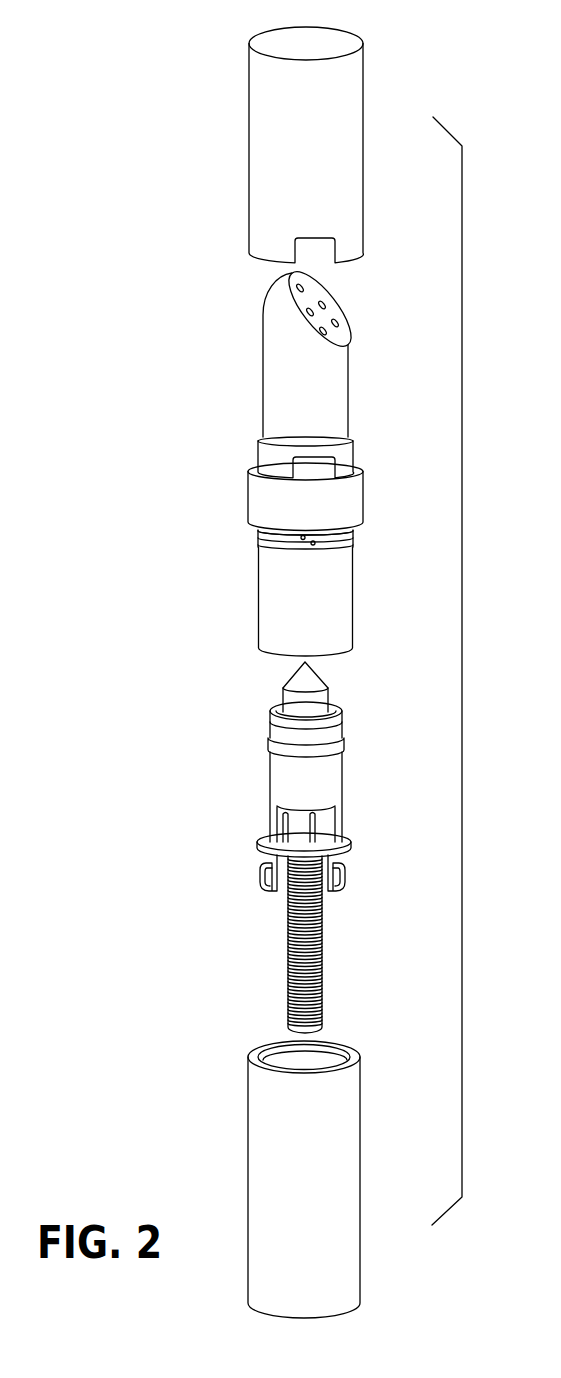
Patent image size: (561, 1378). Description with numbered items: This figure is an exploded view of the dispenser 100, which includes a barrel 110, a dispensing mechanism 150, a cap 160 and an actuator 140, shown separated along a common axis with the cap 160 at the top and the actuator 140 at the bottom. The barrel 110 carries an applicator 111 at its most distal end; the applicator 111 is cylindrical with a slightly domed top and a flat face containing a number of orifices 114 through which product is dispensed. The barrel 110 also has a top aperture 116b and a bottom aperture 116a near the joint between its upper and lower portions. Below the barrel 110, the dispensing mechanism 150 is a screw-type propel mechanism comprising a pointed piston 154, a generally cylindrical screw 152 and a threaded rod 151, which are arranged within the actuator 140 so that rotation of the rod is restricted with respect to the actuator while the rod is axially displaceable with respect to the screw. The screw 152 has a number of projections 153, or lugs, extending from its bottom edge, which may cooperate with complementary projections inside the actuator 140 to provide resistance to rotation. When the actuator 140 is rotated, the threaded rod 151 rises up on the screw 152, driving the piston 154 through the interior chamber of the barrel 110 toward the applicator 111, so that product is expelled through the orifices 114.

The dispenser 100 is at (195, 462).
The barrel 110 is at (278, 610).
The applicator 111 is at (339, 350).
The orifices 114 is at (324, 303).
The bottom aperture 116a is at (350, 541).
The top aperture 116b is at (303, 538).
The actuator 140 is at (270, 1163).
The dispensing mechanism 150 is at (353, 663).
The threaded rod 151 is at (287, 948).
The screw 152 is at (288, 780).
The projections 153 is at (267, 877).
The piston 154 is at (285, 735).
The cap 160 is at (356, 85).